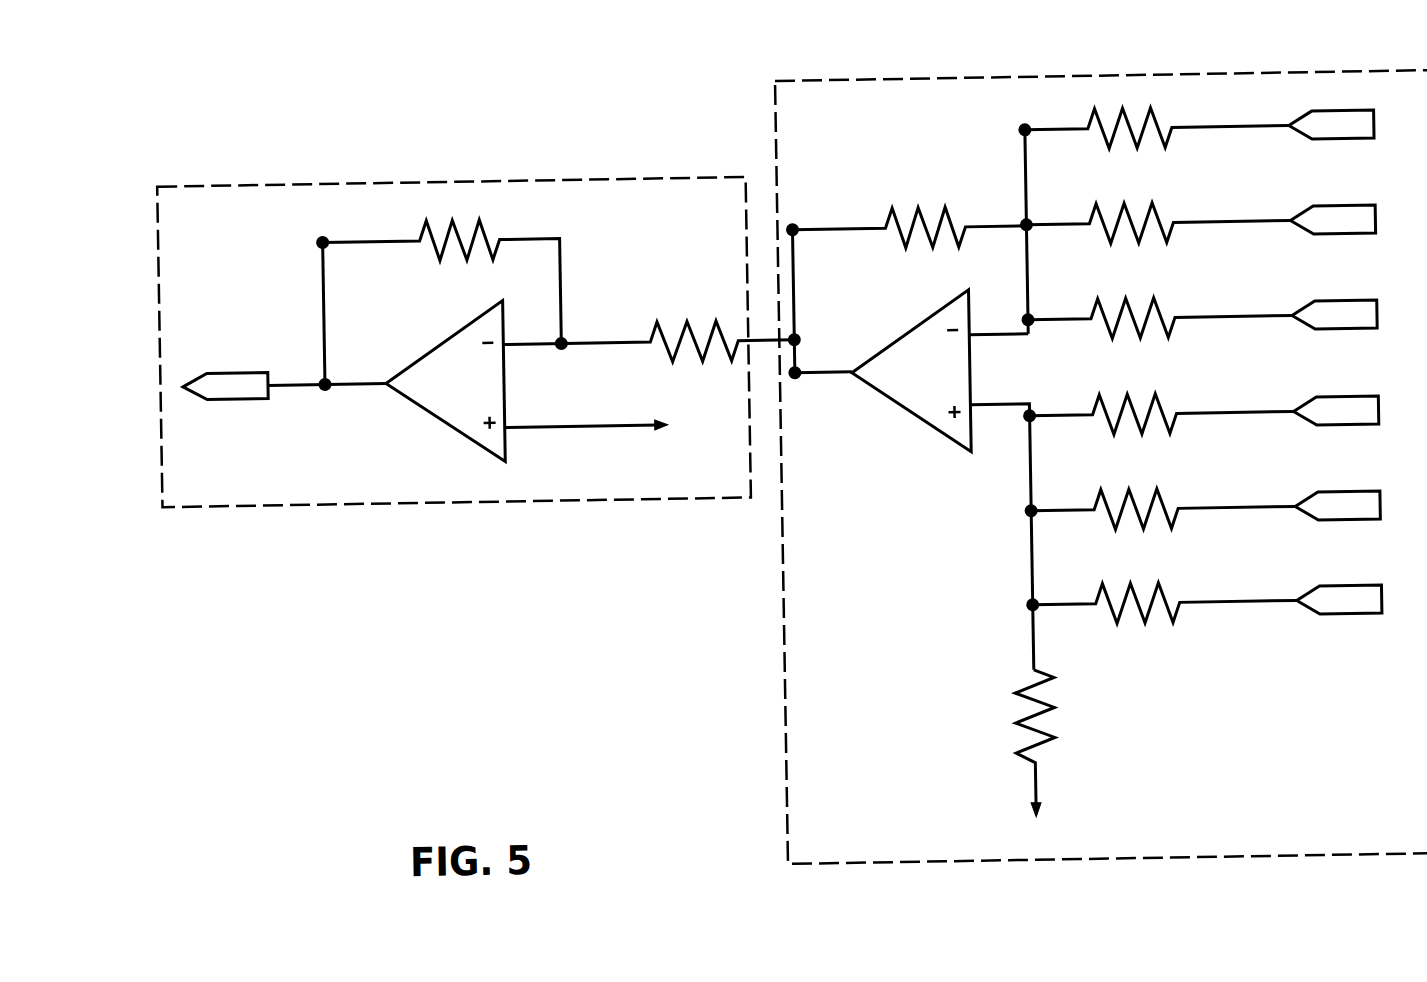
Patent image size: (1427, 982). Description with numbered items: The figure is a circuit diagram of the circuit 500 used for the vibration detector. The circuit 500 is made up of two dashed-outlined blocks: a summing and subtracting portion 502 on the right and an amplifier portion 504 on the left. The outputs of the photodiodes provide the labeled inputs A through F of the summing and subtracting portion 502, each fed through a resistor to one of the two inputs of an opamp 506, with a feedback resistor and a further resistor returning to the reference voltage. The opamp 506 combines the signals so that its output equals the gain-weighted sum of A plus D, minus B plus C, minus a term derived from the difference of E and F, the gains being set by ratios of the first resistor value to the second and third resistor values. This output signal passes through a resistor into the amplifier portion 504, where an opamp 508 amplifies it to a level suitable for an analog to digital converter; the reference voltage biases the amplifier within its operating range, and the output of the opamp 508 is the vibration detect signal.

The circuit 500 is at (773, 36).
The summing and subtracting portion 502 is at (1259, 81).
The amplifier portion 504 is at (636, 177).
The opamp 506 is at (901, 337).
The opamp 508 is at (436, 340).